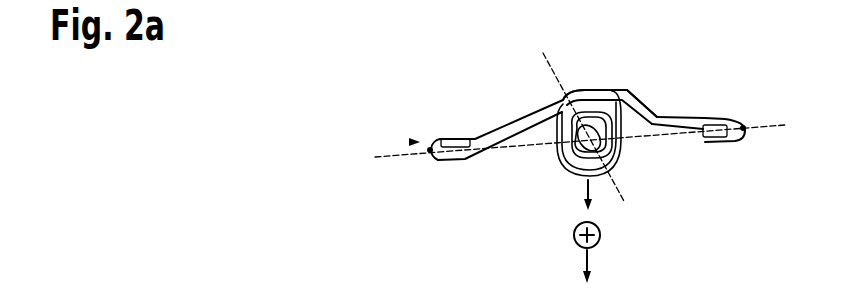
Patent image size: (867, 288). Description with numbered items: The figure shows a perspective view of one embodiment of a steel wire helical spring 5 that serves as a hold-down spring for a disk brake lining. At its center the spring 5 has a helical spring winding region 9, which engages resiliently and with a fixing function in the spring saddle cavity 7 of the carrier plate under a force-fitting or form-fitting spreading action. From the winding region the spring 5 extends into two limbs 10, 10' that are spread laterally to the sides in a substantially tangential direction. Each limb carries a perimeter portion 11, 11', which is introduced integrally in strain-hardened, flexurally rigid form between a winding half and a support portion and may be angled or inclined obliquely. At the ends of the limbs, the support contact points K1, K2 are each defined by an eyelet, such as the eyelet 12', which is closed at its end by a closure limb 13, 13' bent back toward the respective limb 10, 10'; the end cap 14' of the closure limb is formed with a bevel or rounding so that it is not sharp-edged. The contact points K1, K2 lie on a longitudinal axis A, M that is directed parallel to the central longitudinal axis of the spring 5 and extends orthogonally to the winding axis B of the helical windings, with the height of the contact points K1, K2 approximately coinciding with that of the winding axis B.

The wire helical spring 5 is at (588, 70).
The cavity 7 is at (571, 231).
The helical spring winding region 9 is at (582, 170).
The limb 10 is at (632, 79).
The limb 10' is at (541, 80).
The perimeter portion 11 is at (691, 163).
The perimeter portion 11' is at (500, 164).
The eyelet 12' is at (439, 183).
The closure limb 13 is at (740, 167).
The closure limb 13' is at (463, 120).
The end cap 14' is at (378, 132).
The support contact point K1 is at (430, 148).
The support contact point K2 is at (742, 125).
The axis A / center line M A, M is at (773, 120).
The winding axis B is at (618, 184).